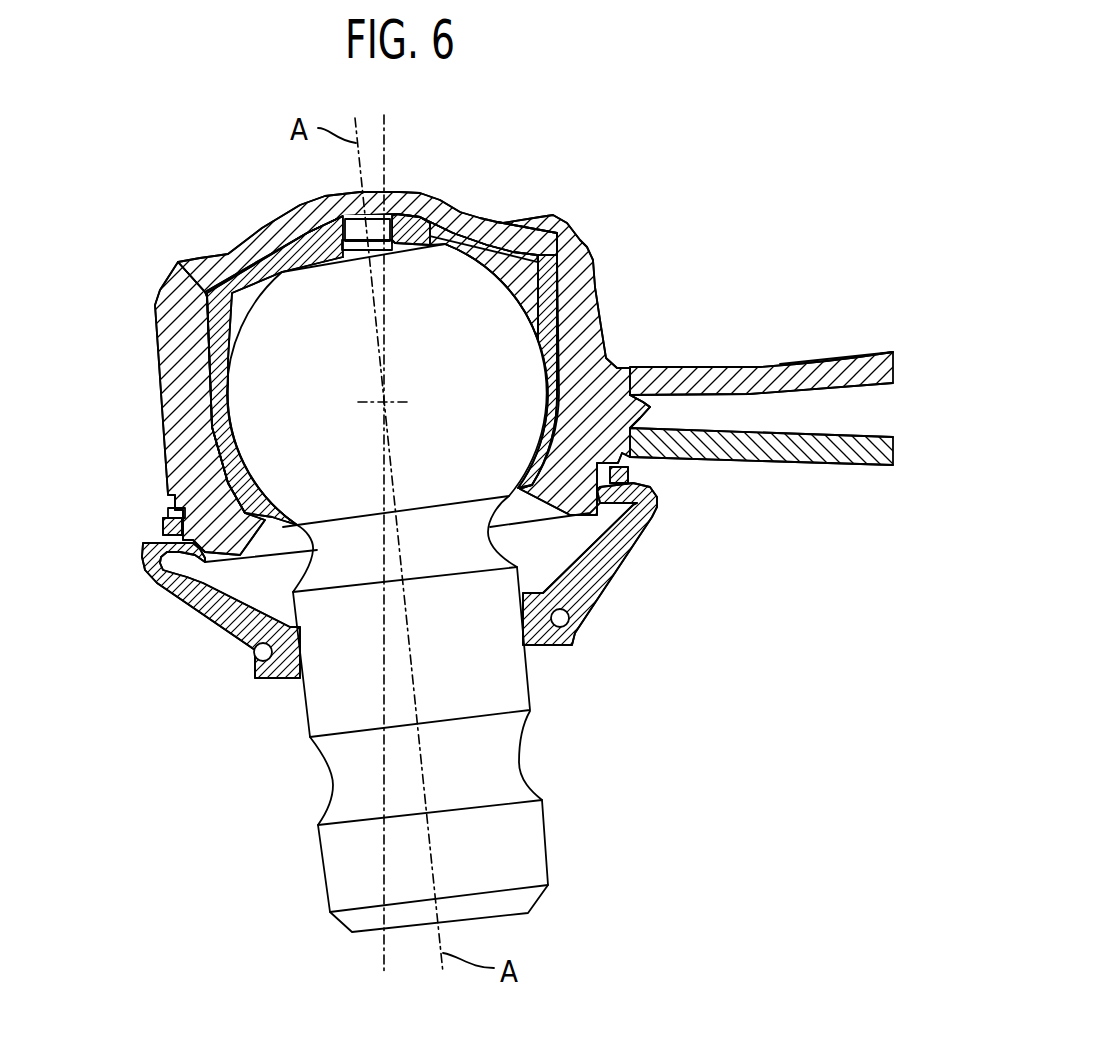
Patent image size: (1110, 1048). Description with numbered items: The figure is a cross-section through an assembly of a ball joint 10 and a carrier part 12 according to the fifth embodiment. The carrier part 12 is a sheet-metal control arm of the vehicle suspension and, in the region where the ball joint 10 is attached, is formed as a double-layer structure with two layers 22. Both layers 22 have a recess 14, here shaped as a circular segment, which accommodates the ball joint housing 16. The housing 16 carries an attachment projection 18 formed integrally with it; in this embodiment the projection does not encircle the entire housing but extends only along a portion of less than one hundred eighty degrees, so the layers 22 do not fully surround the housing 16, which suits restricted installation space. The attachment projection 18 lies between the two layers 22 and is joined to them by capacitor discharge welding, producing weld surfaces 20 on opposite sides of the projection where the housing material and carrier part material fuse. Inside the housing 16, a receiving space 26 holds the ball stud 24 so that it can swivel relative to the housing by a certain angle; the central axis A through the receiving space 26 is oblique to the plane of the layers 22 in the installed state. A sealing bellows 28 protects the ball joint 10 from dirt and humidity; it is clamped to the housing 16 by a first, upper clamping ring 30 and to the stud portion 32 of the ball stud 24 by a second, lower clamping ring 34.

The ball joint 10 is at (130, 600).
The carrier part 12 is at (801, 345).
The recess 14 is at (627, 372).
The ball joint housing 16 is at (177, 320).
The attachment projection 18 is at (645, 416).
The weld surfaces 20 is at (650, 445).
The layers 22 is at (800, 378).
The ball stud 24 is at (285, 413).
The receiving space 26 is at (543, 418).
The sealing bellows 28 is at (583, 602).
The first, upper clamping ring 30 is at (163, 527).
The stud portion 32 is at (348, 865).
The second, lower clamping ring 34 is at (256, 654).